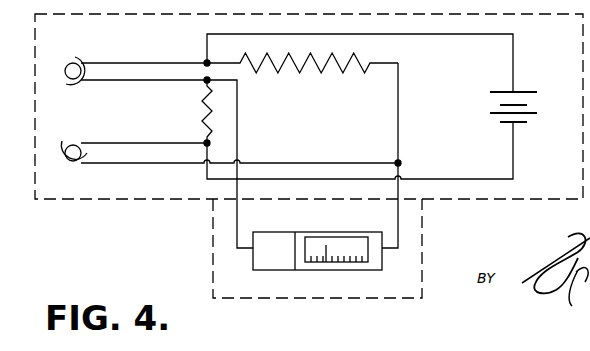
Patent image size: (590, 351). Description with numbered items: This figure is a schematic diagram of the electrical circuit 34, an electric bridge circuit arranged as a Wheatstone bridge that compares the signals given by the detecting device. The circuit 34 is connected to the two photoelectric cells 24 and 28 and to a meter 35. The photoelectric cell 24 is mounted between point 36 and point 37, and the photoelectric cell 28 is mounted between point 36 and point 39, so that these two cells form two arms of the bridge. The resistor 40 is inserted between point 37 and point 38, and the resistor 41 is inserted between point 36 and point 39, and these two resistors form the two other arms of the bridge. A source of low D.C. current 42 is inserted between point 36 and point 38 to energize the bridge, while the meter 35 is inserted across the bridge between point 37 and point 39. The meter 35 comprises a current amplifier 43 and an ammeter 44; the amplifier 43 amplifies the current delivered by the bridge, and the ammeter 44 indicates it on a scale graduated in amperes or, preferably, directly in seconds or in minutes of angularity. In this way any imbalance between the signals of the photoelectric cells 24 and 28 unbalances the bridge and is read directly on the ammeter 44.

The photoelectric cell 24 is at (72, 65).
The photoelectric cell 28 is at (70, 147).
The electrical circuit 34 is at (570, 46).
The meter 35 is at (413, 290).
The point 36 is at (205, 61).
The point 37 is at (205, 82).
The point 38 is at (205, 141).
The point 39 is at (397, 160).
The resistor 40 is at (202, 110).
The resistor 41 is at (343, 64).
The source of low D.C. current 42 is at (530, 112).
The current amplifier 43 is at (287, 261).
The ammeter 44 is at (367, 235).